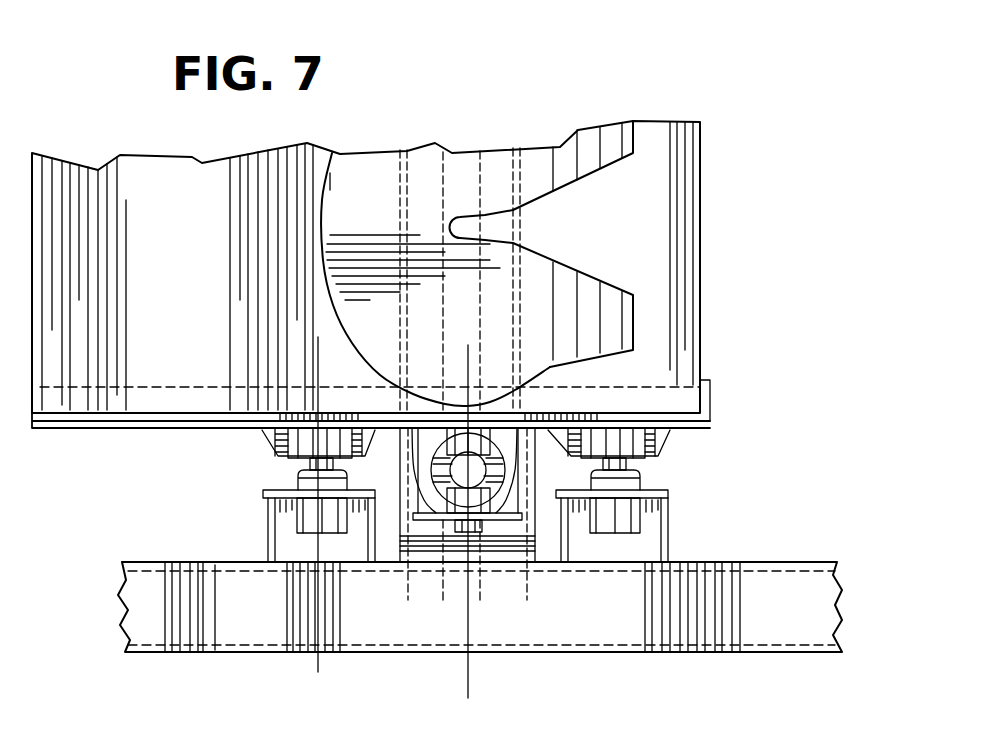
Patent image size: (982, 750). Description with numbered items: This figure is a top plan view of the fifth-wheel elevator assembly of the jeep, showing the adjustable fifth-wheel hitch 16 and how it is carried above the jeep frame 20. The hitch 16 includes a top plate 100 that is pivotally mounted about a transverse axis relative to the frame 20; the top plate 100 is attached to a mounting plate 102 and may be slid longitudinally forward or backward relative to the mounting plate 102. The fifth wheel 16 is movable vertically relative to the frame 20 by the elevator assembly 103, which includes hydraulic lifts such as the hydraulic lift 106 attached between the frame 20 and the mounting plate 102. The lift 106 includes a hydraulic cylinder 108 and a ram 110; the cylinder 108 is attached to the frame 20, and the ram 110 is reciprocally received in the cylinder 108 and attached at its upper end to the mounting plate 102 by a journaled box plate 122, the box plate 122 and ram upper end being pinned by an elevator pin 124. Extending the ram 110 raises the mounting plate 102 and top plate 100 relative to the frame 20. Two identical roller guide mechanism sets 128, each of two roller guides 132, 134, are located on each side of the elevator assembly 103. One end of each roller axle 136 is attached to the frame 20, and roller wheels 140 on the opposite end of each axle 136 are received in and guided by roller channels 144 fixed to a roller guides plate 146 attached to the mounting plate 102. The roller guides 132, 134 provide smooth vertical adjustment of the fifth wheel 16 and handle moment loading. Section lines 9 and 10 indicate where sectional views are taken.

The adjustable fifth-wheel hitch 16 is at (425, 162).
The top plate 100 is at (368, 200).
The mounting plate 102 is at (667, 235).
The roller guides plate 146 is at (232, 427).
The roller channel 144 is at (702, 427).
The roller guide 134 is at (308, 466).
The roller axle 136 is at (300, 479).
The elevator assembly 103 is at (252, 503).
The roller wheel 140 is at (652, 448).
The roller guide 132 is at (641, 463).
The hydraulic lift 106 is at (536, 541).
The roller guide mechanism set 128 is at (734, 475).
The journaled box plate 122 is at (444, 520).
The elevator pin 124 is at (455, 470).
The hydraulic cylinder 108 is at (436, 513).
The ram 110 is at (505, 521).
The jeep frame 20 is at (128, 656).
The section line 10- 10 is at (318, 337).
The section line 9- 9 is at (468, 345).